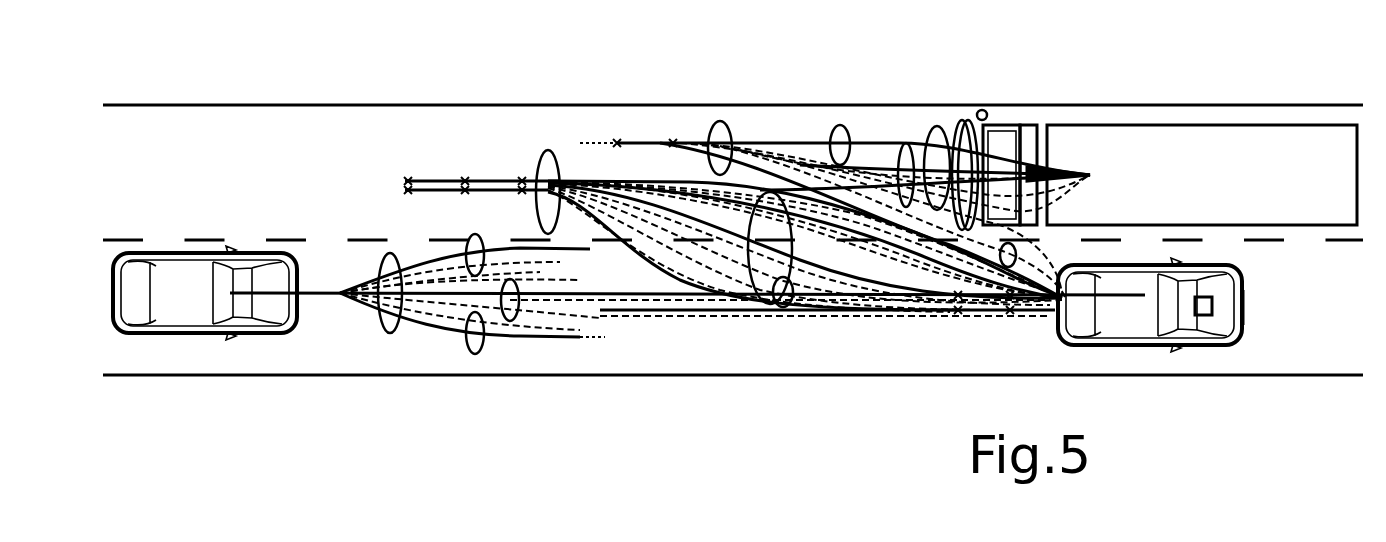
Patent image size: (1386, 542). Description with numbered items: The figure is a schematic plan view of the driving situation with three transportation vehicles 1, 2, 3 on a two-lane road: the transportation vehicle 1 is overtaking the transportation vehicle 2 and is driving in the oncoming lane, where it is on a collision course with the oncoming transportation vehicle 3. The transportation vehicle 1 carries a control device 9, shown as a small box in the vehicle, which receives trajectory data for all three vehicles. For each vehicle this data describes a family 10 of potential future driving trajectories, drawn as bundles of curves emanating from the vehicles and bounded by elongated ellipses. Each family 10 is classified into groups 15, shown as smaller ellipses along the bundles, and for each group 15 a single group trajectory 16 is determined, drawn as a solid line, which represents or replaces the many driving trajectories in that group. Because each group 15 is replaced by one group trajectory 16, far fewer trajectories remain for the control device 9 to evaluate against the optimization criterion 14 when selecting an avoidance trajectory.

The transportation vehicle 1 is at (1181, 320).
The transportation vehicle 2 is at (1136, 187).
The transportation vehicle 3 is at (174, 308).
The control device 9 is at (1203, 315).
The optimization criterion 14 is at (1243, 302).
The family of potential future driving trajectories 10 is at (548, 150).
The group 15 is at (487, 262).
The group trajectory 16 is at (420, 263).